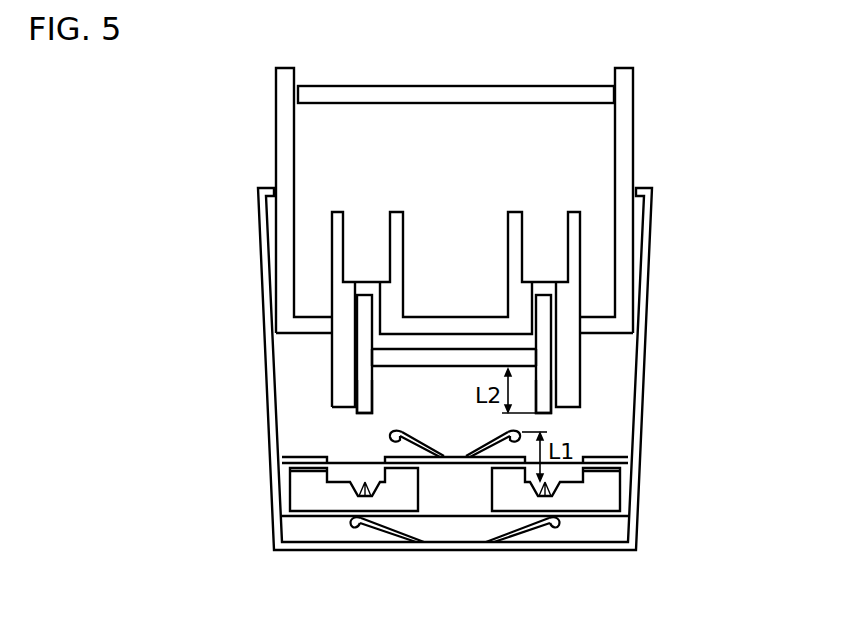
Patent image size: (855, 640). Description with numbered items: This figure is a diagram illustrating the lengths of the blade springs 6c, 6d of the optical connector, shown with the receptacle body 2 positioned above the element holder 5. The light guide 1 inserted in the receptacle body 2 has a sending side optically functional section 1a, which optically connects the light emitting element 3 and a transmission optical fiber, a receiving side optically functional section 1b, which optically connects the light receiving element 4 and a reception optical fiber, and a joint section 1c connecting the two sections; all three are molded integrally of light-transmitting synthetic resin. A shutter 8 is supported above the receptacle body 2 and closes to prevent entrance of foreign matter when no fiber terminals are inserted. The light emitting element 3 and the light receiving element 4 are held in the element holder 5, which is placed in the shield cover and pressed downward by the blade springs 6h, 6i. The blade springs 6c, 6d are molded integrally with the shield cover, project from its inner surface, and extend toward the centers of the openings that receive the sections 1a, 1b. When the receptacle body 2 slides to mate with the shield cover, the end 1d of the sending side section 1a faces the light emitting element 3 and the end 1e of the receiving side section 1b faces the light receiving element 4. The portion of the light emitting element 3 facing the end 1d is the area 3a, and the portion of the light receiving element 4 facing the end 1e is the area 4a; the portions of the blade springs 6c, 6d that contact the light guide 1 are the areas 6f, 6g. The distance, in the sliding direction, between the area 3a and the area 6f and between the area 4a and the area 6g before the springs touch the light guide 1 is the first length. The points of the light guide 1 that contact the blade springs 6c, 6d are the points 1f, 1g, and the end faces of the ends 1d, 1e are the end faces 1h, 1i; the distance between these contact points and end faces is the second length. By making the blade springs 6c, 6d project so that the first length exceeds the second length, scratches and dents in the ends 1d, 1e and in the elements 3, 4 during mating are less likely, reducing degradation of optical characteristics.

The light guide 1 is at (458, 289).
The sending side optically functional section 1a is at (545, 308).
The receiving side optically functional section 1b is at (365, 310).
The joint section 1c is at (463, 360).
The end of the sending side optically functional section 1d is at (545, 393).
The end of the receiving side optically functional section 1e is at (365, 398).
The point of the light guide contacting blade spring 6c 1f is at (512, 375).
The point of the light guide contacting blade spring 6d 1g is at (405, 358).
The end face of end 1d 1h is at (536, 426).
The end face of end 1e 1i is at (376, 426).
The receptacle body 2 is at (627, 133).
The light emitting element 3 is at (593, 493).
The area of the light emitting element 3a is at (573, 473).
The light receiving element 4 is at (313, 487).
The area of the light receiving element 4a is at (366, 484).
The element holder 5 is at (450, 495).
The blade spring 6c is at (517, 440).
The blade spring 6d is at (403, 443).
The area of blade spring 6c 6f is at (505, 523).
The area of blade spring 6d 6g is at (327, 514).
The blade spring 6h is at (551, 529).
The blade spring 6i is at (357, 529).
The shutter 8 is at (504, 91).